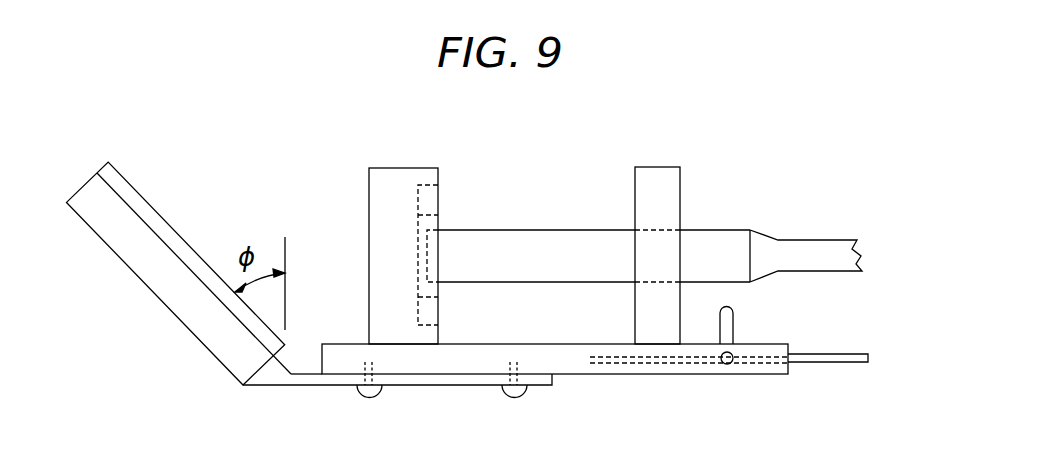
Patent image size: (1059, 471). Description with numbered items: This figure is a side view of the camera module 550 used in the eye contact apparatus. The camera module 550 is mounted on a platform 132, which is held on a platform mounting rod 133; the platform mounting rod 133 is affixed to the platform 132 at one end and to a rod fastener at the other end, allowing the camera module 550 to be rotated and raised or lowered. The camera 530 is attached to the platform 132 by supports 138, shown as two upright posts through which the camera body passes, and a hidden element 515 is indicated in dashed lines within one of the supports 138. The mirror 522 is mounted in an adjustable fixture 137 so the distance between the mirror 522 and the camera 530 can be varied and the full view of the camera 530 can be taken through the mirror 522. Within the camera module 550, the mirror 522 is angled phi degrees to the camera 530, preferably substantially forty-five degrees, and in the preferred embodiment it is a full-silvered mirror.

The mirror 522 is at (158, 214).
The camera module 550 is at (347, 132).
The hidden mounting element in post 515 is at (430, 197).
The supports 138 is at (369, 228).
The camera 530 is at (555, 244).
The platform mounting rod 133 is at (733, 325).
The adjustable fixture 137 is at (270, 373).
The platform 132 is at (558, 365).